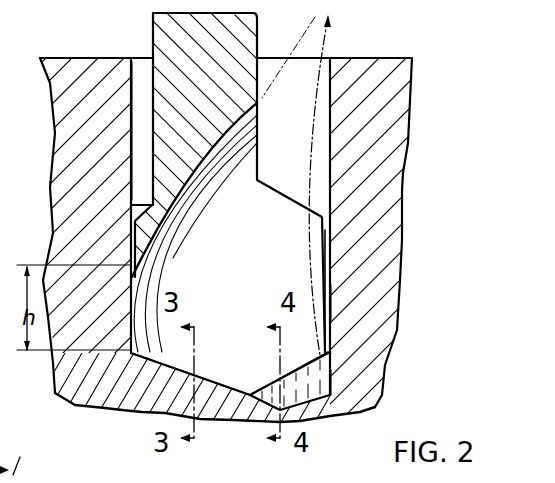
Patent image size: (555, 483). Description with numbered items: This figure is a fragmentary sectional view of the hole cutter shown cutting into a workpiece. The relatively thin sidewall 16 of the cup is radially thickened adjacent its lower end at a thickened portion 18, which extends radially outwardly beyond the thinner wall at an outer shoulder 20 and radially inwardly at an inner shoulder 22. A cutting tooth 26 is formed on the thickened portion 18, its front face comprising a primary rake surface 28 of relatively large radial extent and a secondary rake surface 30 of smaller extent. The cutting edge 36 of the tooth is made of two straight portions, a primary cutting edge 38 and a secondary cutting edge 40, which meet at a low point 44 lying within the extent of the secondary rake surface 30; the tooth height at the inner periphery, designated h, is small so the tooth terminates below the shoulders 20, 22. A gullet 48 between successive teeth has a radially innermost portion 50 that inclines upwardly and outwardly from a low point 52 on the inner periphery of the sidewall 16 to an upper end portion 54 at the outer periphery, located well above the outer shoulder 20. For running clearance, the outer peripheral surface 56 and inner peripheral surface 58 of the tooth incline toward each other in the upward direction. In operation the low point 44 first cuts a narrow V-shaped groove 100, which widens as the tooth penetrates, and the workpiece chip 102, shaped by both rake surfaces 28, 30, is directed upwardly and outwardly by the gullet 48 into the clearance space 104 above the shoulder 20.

The sidewall 16 is at (255, 34).
The thickened portion 18 is at (333, 233).
The outer shoulder 20 is at (330, 200).
The inner shoulder 22 is at (131, 206).
The cutting tooth 26 is at (120, 409).
The primary rake surface 28 is at (216, 287).
The secondary rake surface 30 is at (318, 378).
The cutting edge 36 is at (210, 383).
The primary cutting edge 38 is at (152, 358).
The secondary cutting edge 40 is at (318, 400).
The low point 44 is at (260, 415).
The gullet 48 is at (257, 141).
The radially innermost portion of the gullet 50 is at (193, 173).
The low point of gullet 52 is at (130, 264).
The upper end portion of gullet 54 is at (257, 103).
The outer peripheral surface 56 is at (331, 302).
The inner peripheral surface 58 is at (90, 346).
The groove 100 is at (134, 80).
The workpiece chip 102 is at (332, 29).
The clearance space 104 is at (330, 138).